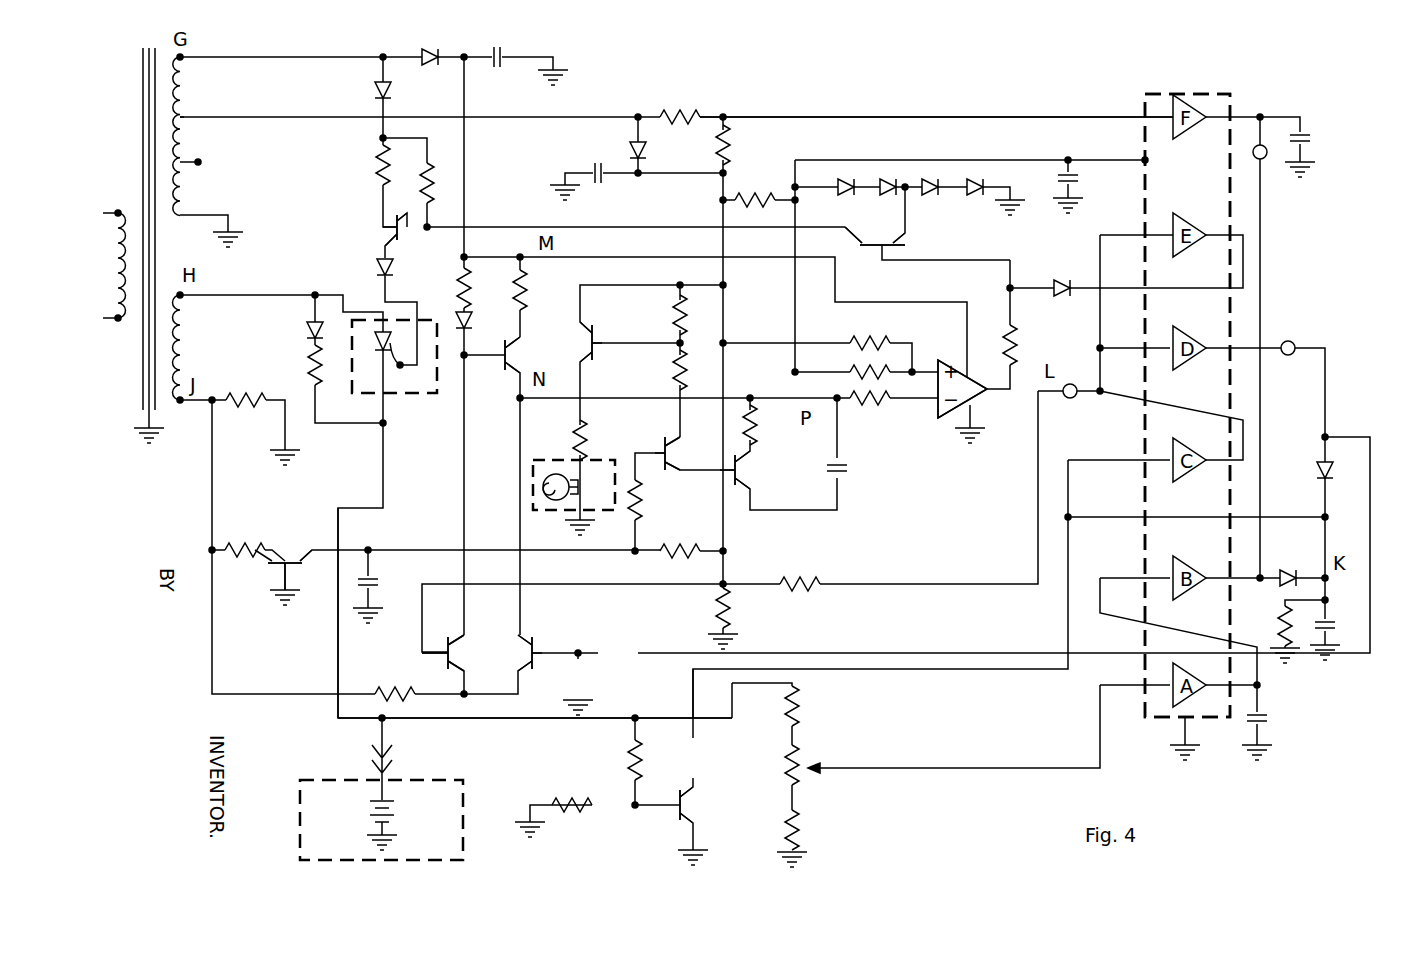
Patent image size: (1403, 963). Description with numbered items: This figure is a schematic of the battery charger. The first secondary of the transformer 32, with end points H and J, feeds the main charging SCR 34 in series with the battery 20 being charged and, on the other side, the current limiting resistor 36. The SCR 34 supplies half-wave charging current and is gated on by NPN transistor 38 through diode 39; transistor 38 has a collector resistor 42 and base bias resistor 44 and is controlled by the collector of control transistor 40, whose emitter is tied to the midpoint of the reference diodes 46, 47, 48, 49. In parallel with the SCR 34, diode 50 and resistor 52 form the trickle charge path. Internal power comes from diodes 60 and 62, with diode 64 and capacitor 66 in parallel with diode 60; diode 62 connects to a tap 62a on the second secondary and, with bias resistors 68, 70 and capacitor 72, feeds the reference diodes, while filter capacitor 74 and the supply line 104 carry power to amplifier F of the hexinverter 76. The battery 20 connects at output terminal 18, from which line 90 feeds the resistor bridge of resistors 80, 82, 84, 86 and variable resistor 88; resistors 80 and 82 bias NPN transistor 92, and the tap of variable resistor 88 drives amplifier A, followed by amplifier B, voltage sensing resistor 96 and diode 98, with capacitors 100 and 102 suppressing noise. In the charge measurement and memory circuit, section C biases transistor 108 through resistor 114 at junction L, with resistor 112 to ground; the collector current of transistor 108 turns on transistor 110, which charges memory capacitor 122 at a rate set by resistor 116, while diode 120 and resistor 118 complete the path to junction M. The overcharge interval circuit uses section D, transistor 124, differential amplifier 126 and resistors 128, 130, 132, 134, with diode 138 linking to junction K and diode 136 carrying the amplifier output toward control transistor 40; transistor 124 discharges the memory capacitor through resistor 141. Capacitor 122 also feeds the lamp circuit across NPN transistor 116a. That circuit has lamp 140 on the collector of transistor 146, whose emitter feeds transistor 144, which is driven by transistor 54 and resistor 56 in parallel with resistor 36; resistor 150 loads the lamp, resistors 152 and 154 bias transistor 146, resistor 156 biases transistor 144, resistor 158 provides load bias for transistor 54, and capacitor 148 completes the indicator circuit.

The tap 62a is at (183, 112).
The supply line 104 is at (1022, 117).
The diode 60 is at (376, 89).
The diode 64 is at (428, 65).
The capacitor 66 is at (511, 50).
The bias resistor 68 is at (660, 104).
The power diode 62 is at (630, 144).
The capacitor 72 is at (588, 166).
The bias resistor 70 is at (730, 141).
The capacitor 100 is at (727, 198).
The hexinverter 76 is at (1218, 96).
The transistor 110 is at (1316, 144).
The filter capacitor 74 is at (1073, 180).
The diode 46 is at (838, 184).
The diode 47 is at (882, 184).
The diode 48 is at (925, 184).
The diode 49 is at (969, 184).
The control transistor 40 is at (880, 236).
The diode 136 is at (1058, 284).
The collector resistor 42 is at (376, 168).
The base bias resistor 44 is at (432, 166).
The control transistor 38 is at (382, 228).
The diode 39 is at (393, 269).
The resistor 118 is at (456, 294).
The diode 120 is at (469, 309).
The resistor 116 is at (522, 288).
The base bias resistor 154 is at (674, 308).
The transistor 146 is at (590, 344).
The base bias resistor 152 is at (674, 368).
The resistor 128 is at (858, 338).
The resistor 130 is at (855, 372).
The resistor 132 is at (850, 396).
The differential amplifier 126 is at (936, 408).
The resistor 134 is at (1016, 346).
The diode 50 is at (305, 330).
The resistor 52 is at (305, 367).
The main charging SCR 34 is at (357, 363).
The transformer 32 is at (182, 338).
The current limiting resistor 36 is at (252, 408).
The resistor 150 is at (582, 440).
The lamp 140 is at (562, 460).
The transistor 144 is at (665, 455).
The transistor 116a is at (748, 473).
The memory capacitor 122 is at (846, 468).
The diode 138 is at (1321, 458).
The resistor 56 is at (248, 548).
The transistor 54 is at (282, 548).
The capacitor 148 is at (374, 578).
The base bias resistor 156 is at (640, 502).
The resistor 158 is at (674, 548).
The resistor 114 is at (805, 582).
The resistor 112 is at (716, 610).
The diode 98 is at (1296, 556).
The voltage sensing resistor 96 is at (1275, 626).
The output terminal 18 is at (336, 664).
The resistor 141 is at (400, 690).
The transistor 108 is at (457, 656).
The transistor 124 is at (523, 666).
The line 90 is at (524, 718).
The resistor 82 is at (622, 756).
The resistor 80 is at (586, 810).
The voltage sensing transistor 92 is at (691, 808).
The resistor 86 is at (804, 706).
The variable resistor 88 is at (809, 756).
The resistor 84 is at (810, 830).
The capacitor 102 is at (1270, 718).
The battery 20 is at (381, 820).